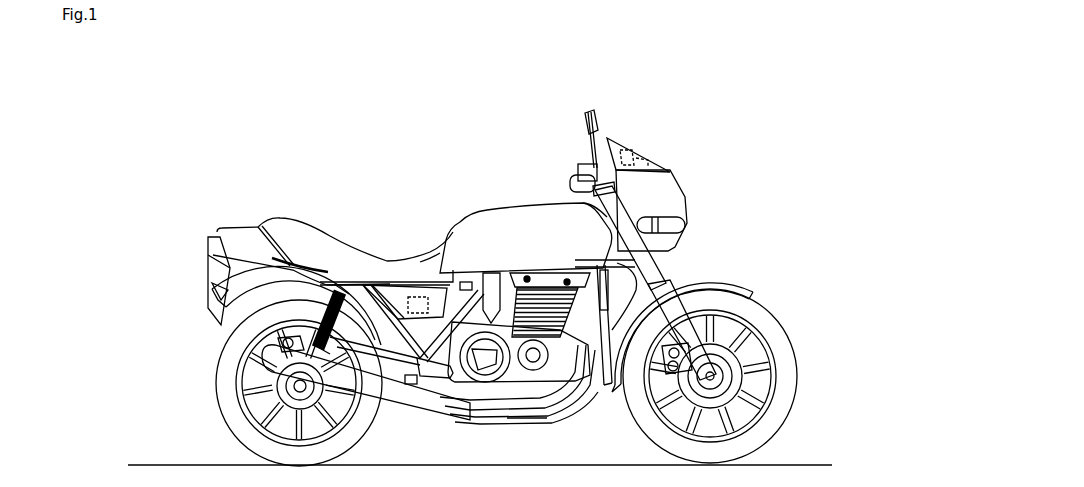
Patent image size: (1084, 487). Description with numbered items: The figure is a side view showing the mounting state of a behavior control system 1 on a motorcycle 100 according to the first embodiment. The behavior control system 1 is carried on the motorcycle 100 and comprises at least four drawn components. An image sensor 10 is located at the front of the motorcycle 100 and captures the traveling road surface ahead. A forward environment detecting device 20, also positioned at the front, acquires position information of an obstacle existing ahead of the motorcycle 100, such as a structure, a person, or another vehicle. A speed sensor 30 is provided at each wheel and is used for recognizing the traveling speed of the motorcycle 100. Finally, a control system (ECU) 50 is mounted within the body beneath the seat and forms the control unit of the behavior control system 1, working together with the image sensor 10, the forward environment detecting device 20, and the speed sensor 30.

The behavior control system 1 is at (318, 138).
The motorcycle 100 is at (815, 78).
The image sensor 10 is at (640, 158).
The forward environment detecting device 20 is at (620, 143).
The speed sensor 30 is at (283, 343).
The control system (ECU) 50 is at (412, 300).